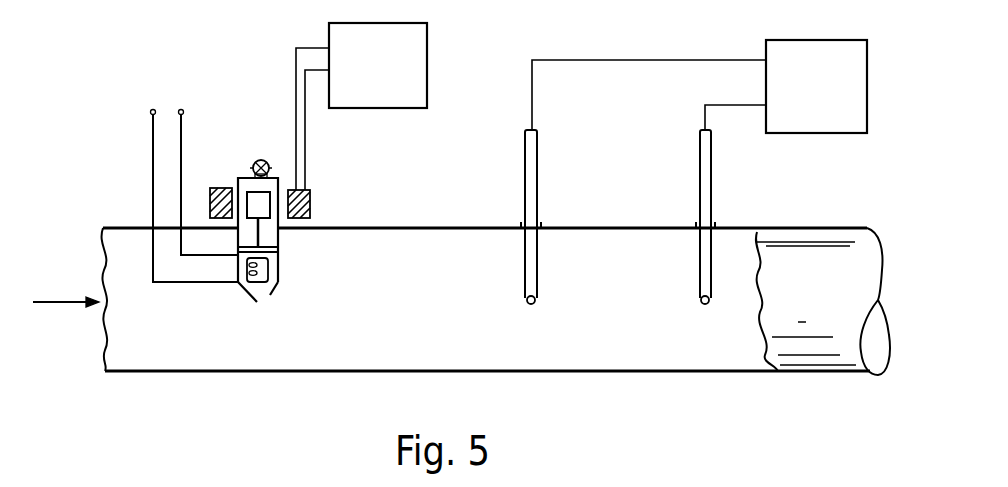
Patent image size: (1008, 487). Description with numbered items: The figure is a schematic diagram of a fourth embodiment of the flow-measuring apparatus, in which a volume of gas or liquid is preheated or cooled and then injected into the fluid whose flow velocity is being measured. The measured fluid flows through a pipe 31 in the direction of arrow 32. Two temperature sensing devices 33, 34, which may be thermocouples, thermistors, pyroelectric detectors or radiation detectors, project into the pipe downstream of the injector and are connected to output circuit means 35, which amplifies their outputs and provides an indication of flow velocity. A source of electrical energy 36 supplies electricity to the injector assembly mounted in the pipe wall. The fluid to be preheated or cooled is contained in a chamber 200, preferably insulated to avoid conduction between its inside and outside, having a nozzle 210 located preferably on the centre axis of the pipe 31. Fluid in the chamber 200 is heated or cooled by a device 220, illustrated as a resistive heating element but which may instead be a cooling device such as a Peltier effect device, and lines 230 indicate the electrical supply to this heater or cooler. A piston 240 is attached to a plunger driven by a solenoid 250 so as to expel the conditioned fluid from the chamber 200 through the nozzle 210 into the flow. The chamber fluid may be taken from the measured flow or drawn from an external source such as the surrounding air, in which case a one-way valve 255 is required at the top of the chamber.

The pipe 31 is at (130, 226).
The arrow 32 is at (55, 300).
The temperature sensing device 33 is at (540, 293).
The temperature sensing device 34 is at (698, 294).
The output circuit means 35 is at (825, 134).
The source of electrical energy 36 is at (430, 64).
The chamber 200 is at (264, 295).
The nozzle 210 is at (259, 299).
The device 220 is at (268, 268).
The lines 230 is at (170, 132).
The piston 240 is at (272, 258).
The solenoid 250 is at (312, 200).
The one-way valve 255 is at (259, 160).